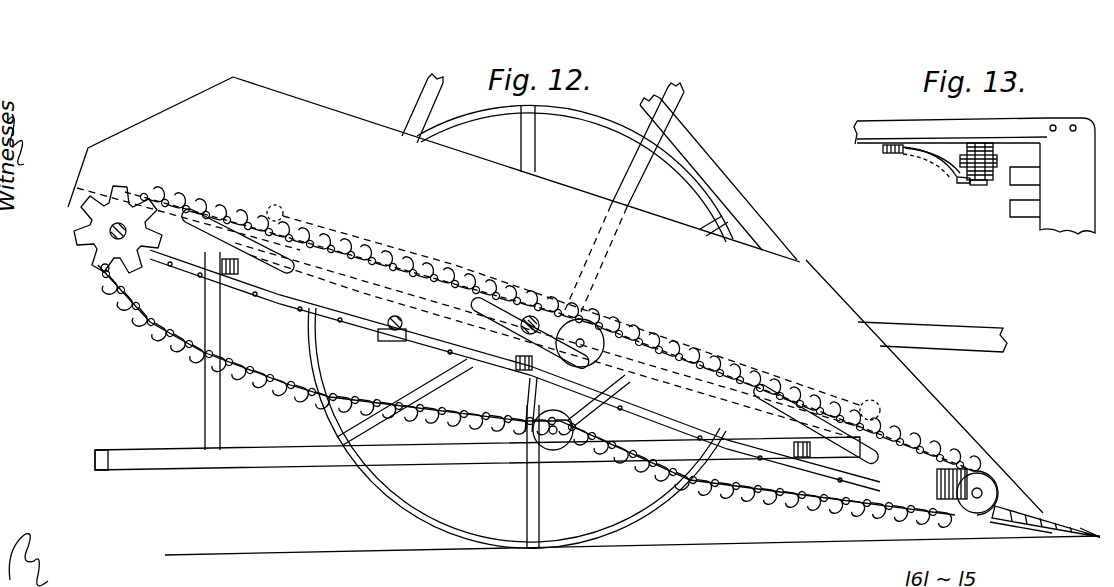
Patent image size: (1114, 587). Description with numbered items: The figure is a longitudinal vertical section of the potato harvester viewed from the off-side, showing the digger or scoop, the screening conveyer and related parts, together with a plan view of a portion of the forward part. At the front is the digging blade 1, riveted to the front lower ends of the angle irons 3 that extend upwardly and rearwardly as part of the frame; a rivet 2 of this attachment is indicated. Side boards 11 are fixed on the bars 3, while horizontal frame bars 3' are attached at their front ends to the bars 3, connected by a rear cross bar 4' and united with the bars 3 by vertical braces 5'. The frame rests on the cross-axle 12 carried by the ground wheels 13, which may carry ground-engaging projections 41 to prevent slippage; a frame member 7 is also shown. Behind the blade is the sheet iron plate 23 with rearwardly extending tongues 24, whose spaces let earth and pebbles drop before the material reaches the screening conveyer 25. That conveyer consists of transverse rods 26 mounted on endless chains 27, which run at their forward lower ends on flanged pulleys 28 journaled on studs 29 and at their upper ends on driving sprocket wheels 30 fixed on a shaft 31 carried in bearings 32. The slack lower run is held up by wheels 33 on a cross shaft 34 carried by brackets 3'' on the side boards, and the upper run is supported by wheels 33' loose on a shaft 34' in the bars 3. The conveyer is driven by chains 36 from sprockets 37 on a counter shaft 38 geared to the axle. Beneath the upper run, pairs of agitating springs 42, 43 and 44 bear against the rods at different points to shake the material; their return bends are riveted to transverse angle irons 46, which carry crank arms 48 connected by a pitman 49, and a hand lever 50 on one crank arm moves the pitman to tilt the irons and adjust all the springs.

In FIG. 12, the digging appliance or blade 1 is at (1083, 530).
In FIG. 13, the digging appliance or blade 1 is at (1078, 138).
In FIG. 13, the rivets 2 is at (1055, 125).
In FIG. 13, the angle irons 3 is at (950, 120).
In FIG. 12, the horizontal frame bars 3' is at (477, 469).
In FIG. 12, the brackets 3'' is at (579, 405).
In FIG. 12, the rear cross bar 4' is at (446, 272).
In FIG. 12, the vertical braces 5' is at (195, 351).
In FIG. 12, the bar 7 is at (933, 329).
In FIG. 12, the side boards 11 is at (316, 113).
In FIG. 13, the side boards 11 is at (867, 146).
In FIG. 12, the cross-axle 12 is at (529, 313).
In FIG. 12, the ground wheels 13 is at (579, 116).
In FIG. 12, the sheet iron plate 23 is at (1044, 518).
In FIG. 13, the sheet iron plate 23 is at (1030, 188).
In FIG. 12, the tongues 24 is at (1017, 508).
In FIG. 13, the tongues 24 is at (1017, 223).
In FIG. 12, the screening conveyer 25 is at (451, 429).
In FIG. 12, the transverse rods 26 is at (150, 318).
In FIG. 12, the endless chains 27 is at (132, 320).
In FIG. 12, the flanged pulleys 28 is at (968, 486).
In FIG. 13, the flanged pulleys 28 is at (968, 165).
In FIG. 12, the studs 29 is at (980, 489).
In FIG. 13, the studs 29 is at (975, 182).
In FIG. 12, the driving sprocket wheels 30 is at (80, 252).
In FIG. 12, the shaft 31 is at (121, 225).
In FIG. 12, the bearings 32 is at (100, 271).
In FIG. 12, the wheels 33 is at (556, 453).
In FIG. 12, the wheels 33' is at (613, 333).
In FIG. 12, the cross shaft 34 is at (523, 461).
In FIG. 12, the shaft 34' is at (611, 313).
In FIG. 12, the chains 36 is at (290, 311).
In FIG. 12, the sprockets 37 is at (400, 342).
In FIG. 12, the counter shaft 38 is at (388, 338).
In FIG. 12, the ground-engaging projections 41 is at (658, 510).
In FIG. 12, the springs 42 is at (762, 414).
In FIG. 12, the springs 43 is at (212, 244).
In FIG. 12, the springs 44 is at (510, 330).
In FIG. 12, the transverse angle irons 46 is at (238, 274).
In FIG. 12, the crank arms 48 is at (277, 211).
In FIG. 12, the pitman or link 49 is at (723, 358).
In FIG. 12, the hand lever 50 is at (628, 178).